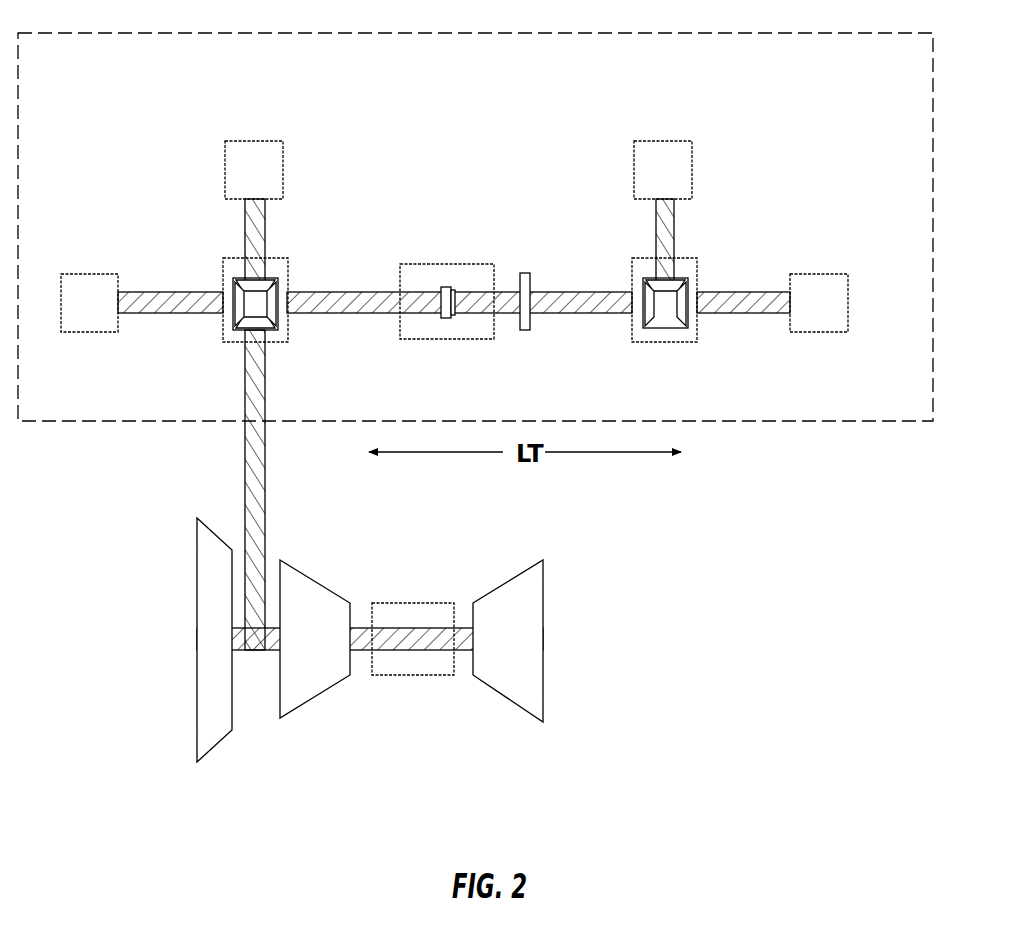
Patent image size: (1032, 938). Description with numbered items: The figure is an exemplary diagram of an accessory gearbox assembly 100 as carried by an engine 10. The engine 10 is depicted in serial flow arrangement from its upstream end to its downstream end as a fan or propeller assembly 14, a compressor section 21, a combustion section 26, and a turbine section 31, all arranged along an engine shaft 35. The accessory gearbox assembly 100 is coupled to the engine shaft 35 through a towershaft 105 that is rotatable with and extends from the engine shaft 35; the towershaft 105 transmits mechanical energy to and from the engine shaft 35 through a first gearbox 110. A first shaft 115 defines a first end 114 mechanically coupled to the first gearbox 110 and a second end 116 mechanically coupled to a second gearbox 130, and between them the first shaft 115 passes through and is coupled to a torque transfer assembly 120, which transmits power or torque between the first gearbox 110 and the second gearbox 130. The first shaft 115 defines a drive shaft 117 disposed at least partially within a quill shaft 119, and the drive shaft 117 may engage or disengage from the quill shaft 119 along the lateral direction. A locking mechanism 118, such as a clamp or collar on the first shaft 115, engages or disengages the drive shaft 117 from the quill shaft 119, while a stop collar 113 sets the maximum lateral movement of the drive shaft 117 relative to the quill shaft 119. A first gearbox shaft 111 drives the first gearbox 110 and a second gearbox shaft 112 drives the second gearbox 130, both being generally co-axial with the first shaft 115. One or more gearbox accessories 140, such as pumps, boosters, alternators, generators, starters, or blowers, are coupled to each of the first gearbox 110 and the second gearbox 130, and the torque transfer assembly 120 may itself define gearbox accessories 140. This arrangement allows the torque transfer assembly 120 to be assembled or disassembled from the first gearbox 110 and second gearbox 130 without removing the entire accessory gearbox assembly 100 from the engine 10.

The accessory gearbox assembly 100 is at (590, 33).
The engine 10 is at (352, 497).
The fan or propeller assembly 14 is at (197, 690).
The compressor section 21 is at (290, 673).
The combustion section 26 is at (414, 676).
The turbine section 31 is at (514, 686).
The engine shaft 35 is at (363, 627).
The towershaft 105 is at (266, 458).
The first gearbox 110 is at (223, 338).
The first gearbox shaft 111 is at (177, 291).
The second gearbox shaft 112 is at (735, 291).
The stop collar 113 is at (525, 331).
The first end 114 is at (297, 316).
The first shaft 115 is at (339, 291).
The second end 116 is at (622, 318).
The drive shaft 117 is at (352, 318).
The locking mechanism 118 is at (447, 289).
The quill shaft 119 is at (561, 316).
The torque transfer assembly 120 is at (494, 264).
The second gearbox 130 is at (699, 334).
The gearbox accessories 140 is at (255, 122).